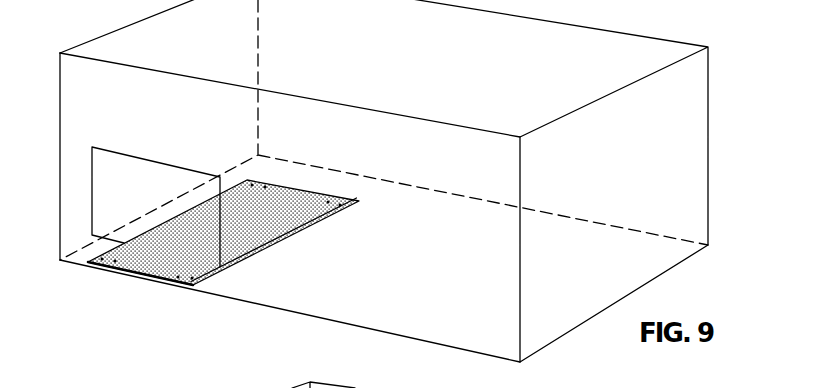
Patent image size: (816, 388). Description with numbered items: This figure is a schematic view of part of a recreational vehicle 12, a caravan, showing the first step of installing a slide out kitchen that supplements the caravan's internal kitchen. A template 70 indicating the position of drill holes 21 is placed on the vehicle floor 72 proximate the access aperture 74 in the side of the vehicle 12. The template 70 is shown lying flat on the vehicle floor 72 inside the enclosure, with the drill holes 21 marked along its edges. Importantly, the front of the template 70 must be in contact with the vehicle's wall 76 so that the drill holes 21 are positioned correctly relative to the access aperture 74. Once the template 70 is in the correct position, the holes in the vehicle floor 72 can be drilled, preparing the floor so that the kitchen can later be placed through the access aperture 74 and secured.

The recreational vehicle 12 is at (711, 147).
The drill holes 21 is at (252, 183).
The template 70 is at (150, 272).
The vehicle floor 72 is at (455, 300).
The access aperture 74 is at (92, 153).
The vehicle's wall 76 is at (60, 178).